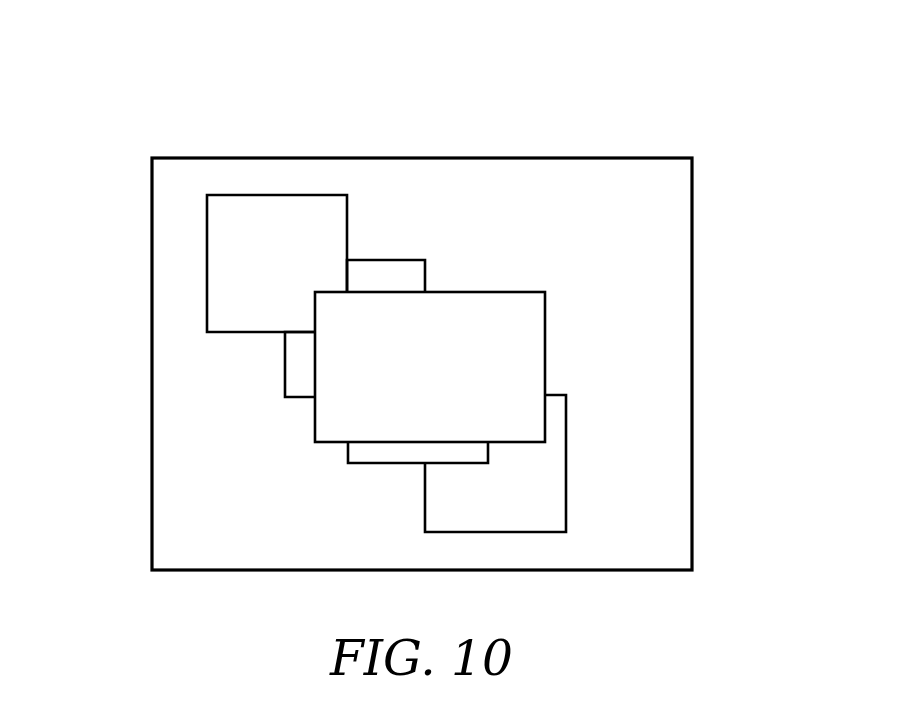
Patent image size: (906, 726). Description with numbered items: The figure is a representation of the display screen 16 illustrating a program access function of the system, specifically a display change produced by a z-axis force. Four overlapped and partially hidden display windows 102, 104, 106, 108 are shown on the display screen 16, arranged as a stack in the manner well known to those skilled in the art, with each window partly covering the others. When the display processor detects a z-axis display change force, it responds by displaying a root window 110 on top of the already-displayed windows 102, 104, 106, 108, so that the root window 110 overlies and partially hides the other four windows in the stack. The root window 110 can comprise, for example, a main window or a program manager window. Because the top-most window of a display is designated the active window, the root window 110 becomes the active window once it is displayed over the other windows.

The display screen 16 is at (692, 268).
The display window 102 is at (222, 250).
The display window 104 is at (378, 272).
The display window 106 is at (373, 451).
The display window 108 is at (540, 482).
The root window 110 is at (330, 367).